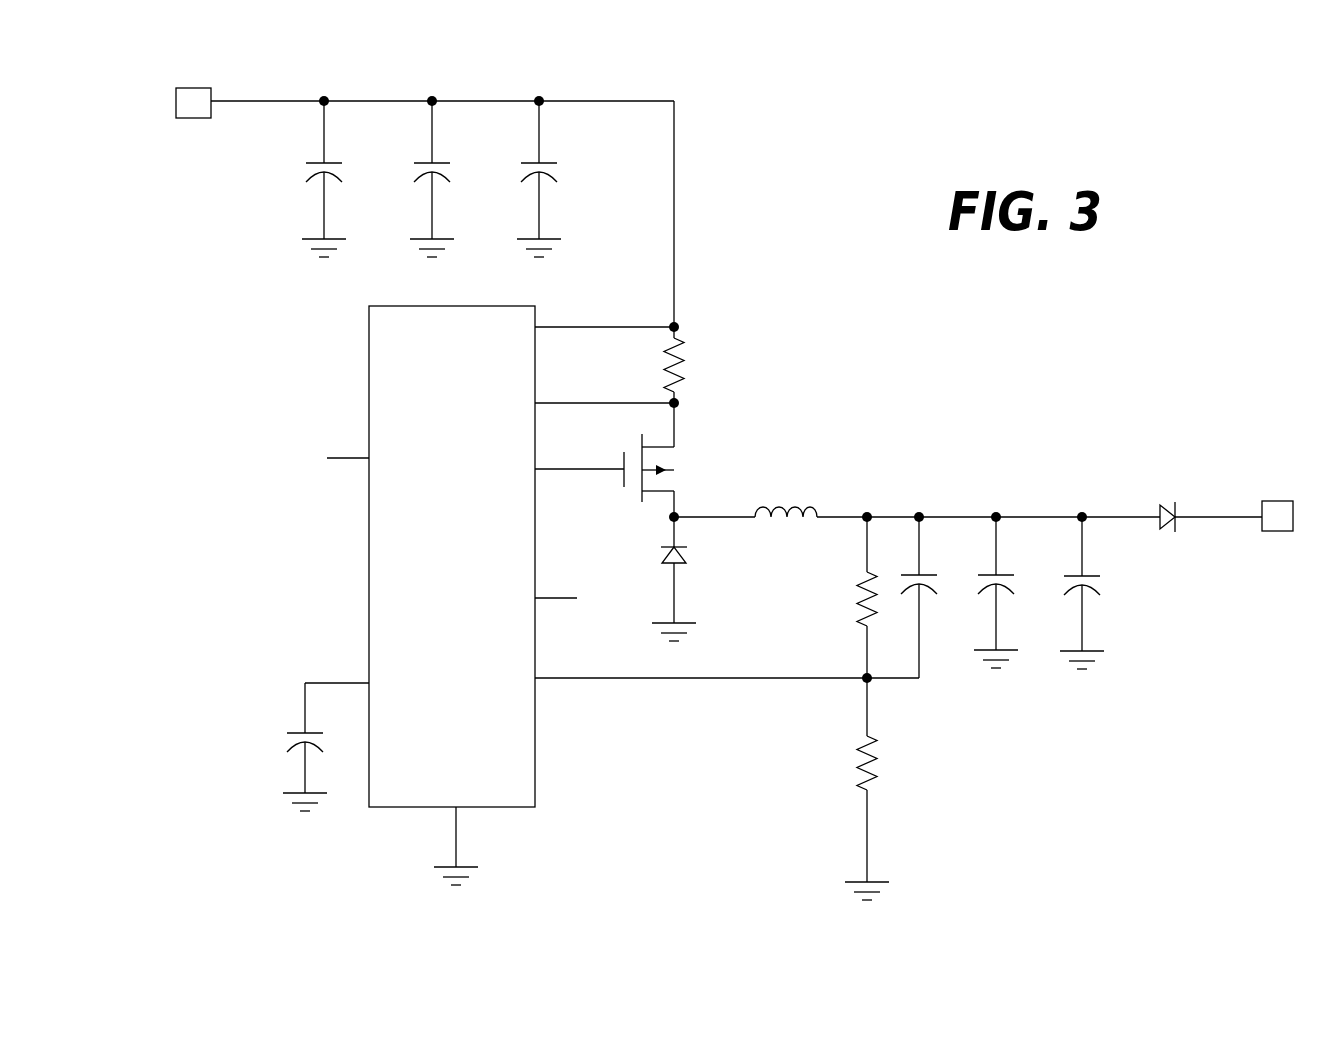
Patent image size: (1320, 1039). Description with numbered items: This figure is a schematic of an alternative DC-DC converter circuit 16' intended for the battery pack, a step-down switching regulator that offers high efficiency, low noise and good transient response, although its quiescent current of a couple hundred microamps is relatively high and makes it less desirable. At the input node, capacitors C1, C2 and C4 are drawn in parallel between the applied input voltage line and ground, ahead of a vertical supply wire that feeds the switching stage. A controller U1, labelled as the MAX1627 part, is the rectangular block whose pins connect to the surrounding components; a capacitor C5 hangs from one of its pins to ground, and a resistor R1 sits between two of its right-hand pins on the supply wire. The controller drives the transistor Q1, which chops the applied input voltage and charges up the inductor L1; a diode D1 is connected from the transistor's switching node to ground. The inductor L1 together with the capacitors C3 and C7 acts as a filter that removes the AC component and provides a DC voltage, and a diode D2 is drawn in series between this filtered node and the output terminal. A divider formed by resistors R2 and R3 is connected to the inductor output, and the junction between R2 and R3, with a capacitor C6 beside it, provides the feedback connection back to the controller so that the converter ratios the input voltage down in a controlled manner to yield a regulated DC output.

The DC-DC converter circuit 16' is at (741, 460).
The input capacitor C1 is at (336, 179).
The input capacitor C2 is at (444, 179).
The input capacitor C4 is at (551, 179).
The capacitor C5 is at (286, 747).
The controller IC MAX1627ESA U1 is at (612, 591).
The resistor R1 is at (695, 365).
The transistor Q1 is at (670, 460).
The diode D1 is at (691, 579).
The inductor L1 is at (786, 488).
The resistor R2 is at (847, 600).
The resistor R3 is at (853, 789).
The capacitor C6 is at (929, 597).
The capacitor C3 is at (1008, 592).
The capacitor C7 is at (1094, 593).
The output diode D2 is at (1206, 496).